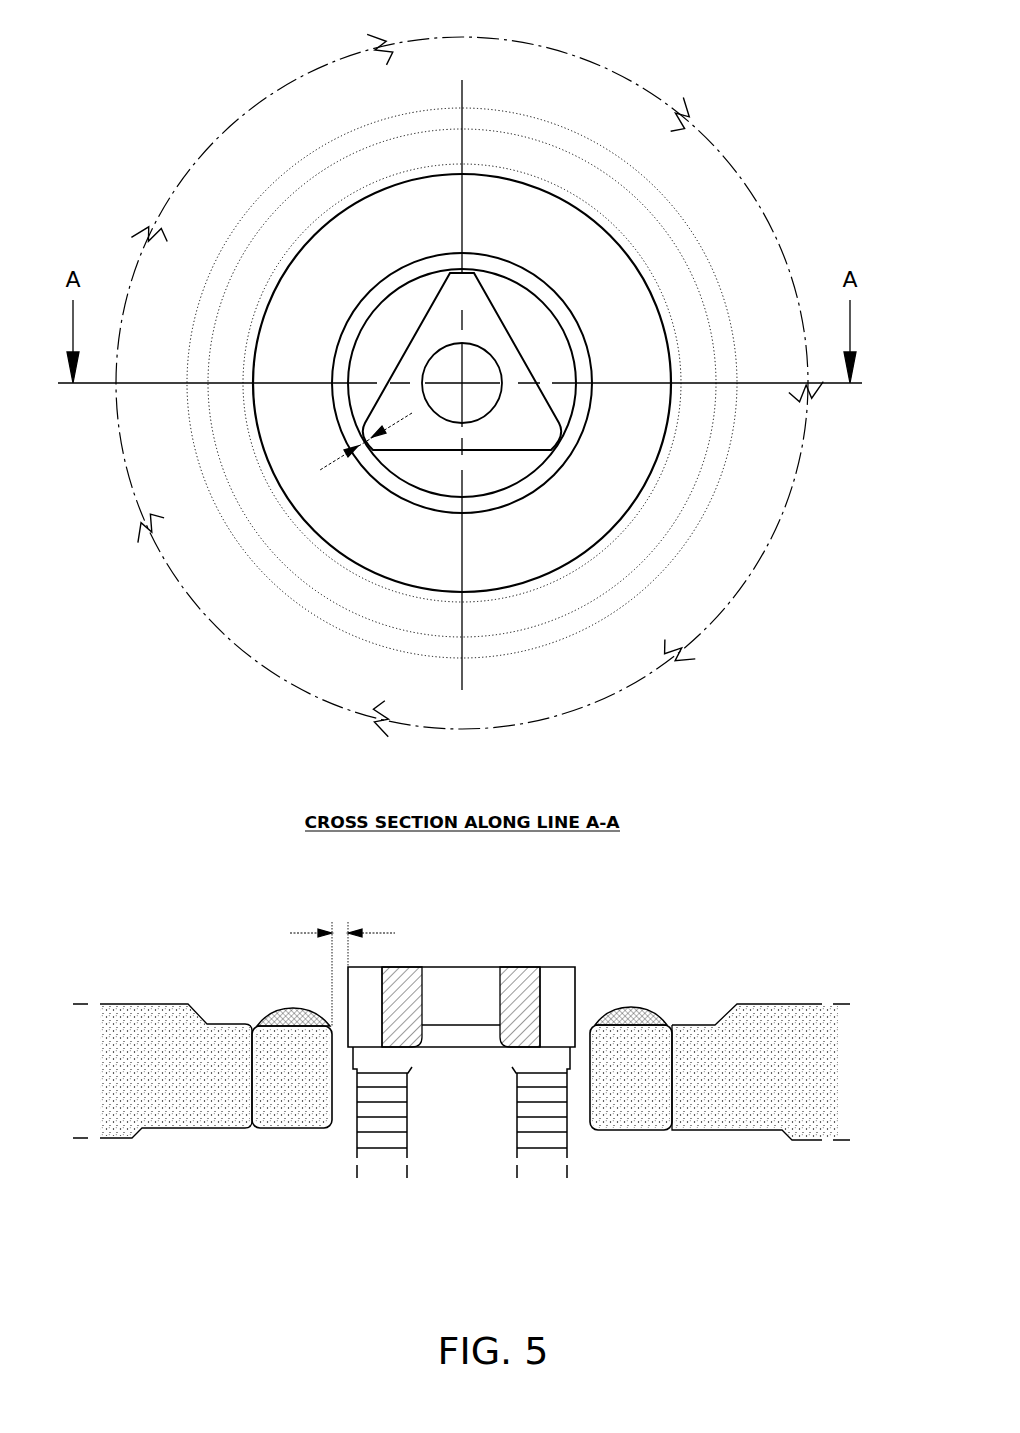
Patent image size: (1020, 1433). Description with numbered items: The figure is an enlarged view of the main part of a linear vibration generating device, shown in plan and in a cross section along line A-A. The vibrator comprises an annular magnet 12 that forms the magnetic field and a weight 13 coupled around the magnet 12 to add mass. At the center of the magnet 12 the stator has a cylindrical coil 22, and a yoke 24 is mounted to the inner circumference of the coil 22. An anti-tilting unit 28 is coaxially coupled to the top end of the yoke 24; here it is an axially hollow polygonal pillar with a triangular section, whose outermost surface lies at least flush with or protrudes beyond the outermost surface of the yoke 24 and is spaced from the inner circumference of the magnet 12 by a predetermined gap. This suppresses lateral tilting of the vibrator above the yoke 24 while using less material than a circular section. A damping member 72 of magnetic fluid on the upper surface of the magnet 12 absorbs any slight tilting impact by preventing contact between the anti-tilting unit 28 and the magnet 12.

The annular magnet 12 is at (603, 270).
The weight 13 is at (567, 167).
The cylindrical coil 22 is at (367, 1120).
The yoke 24 is at (482, 1140).
The anti-tilting unit 28 is at (528, 424).
The damping member 72 is at (635, 1007).